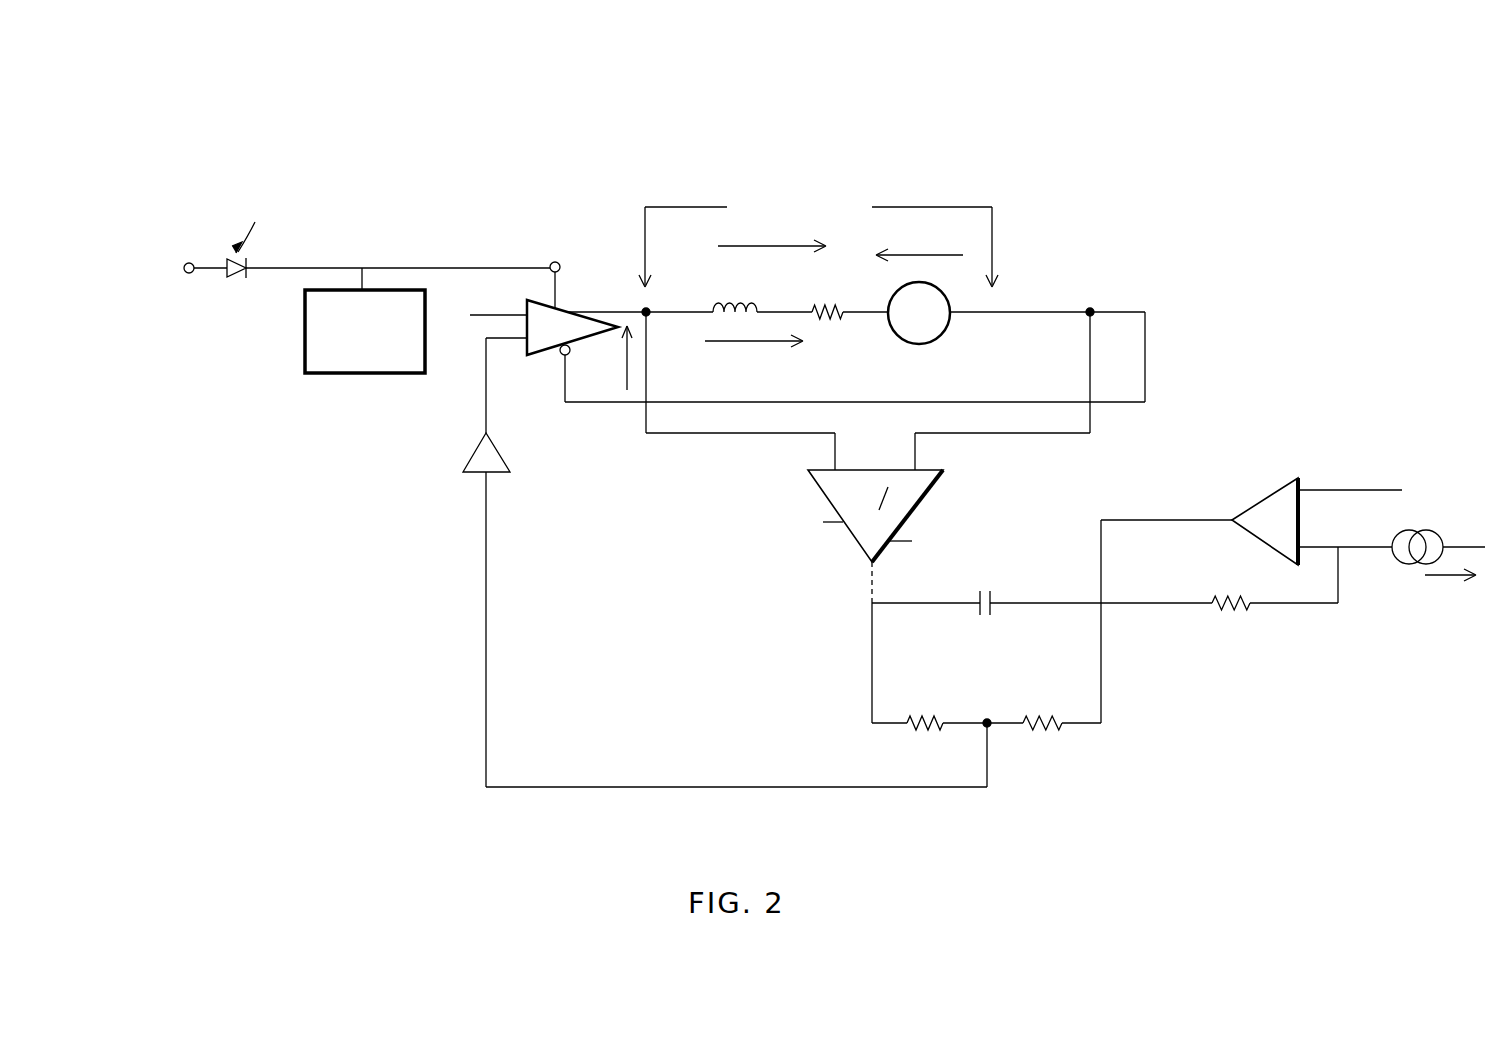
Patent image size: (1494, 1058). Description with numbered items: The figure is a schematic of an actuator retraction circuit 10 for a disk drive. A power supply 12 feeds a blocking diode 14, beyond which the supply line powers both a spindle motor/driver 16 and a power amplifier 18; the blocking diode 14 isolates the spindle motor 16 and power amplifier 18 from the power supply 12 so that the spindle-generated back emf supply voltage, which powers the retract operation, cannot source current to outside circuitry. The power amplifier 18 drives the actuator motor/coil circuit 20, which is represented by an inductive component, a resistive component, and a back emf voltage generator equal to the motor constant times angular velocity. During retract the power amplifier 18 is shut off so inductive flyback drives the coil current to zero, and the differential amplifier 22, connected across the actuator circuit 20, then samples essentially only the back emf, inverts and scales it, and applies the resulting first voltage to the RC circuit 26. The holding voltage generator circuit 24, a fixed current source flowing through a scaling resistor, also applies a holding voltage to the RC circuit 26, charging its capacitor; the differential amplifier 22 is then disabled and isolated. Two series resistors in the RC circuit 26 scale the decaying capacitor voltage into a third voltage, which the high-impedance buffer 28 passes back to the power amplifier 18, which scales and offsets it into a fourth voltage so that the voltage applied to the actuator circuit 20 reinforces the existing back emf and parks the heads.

The actuator retraction circuit 10 is at (1004, 782).
The power supply 12 is at (185, 281).
The blocking diode 14 is at (388, 236).
The spindle motor/driver 16 is at (364, 374).
The power amplifier 18 is at (558, 299).
The actuator motor/coil circuit 20 is at (892, 280).
The differential amplifier 22 is at (935, 496).
The holding voltage generator circuit 24 is at (1293, 536).
The RC circuit 26 is at (1003, 625).
The buffer 28 is at (470, 441).